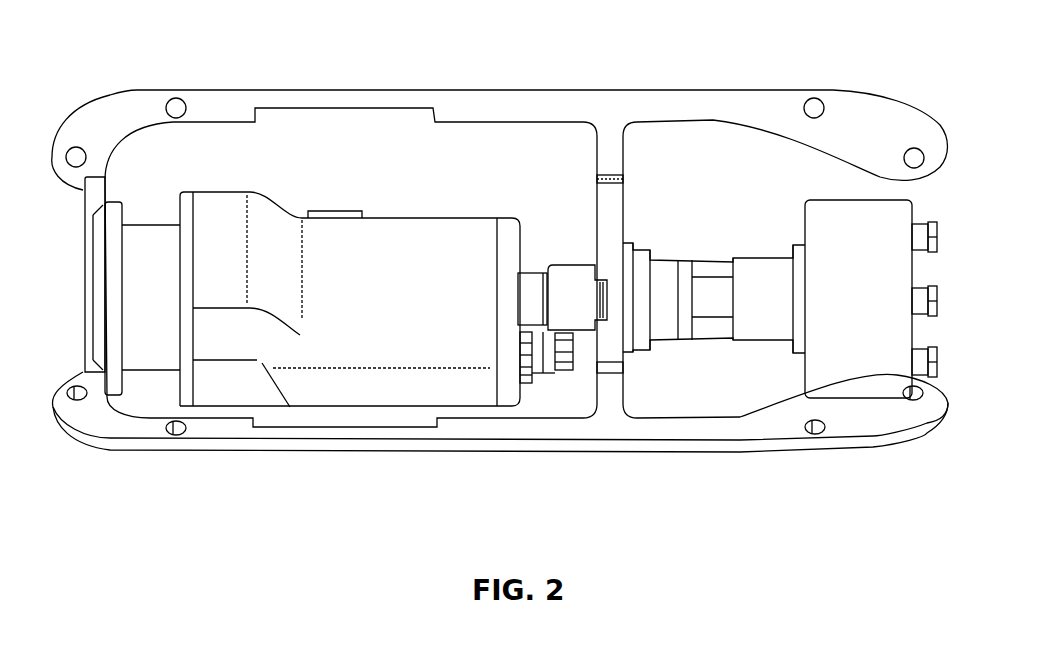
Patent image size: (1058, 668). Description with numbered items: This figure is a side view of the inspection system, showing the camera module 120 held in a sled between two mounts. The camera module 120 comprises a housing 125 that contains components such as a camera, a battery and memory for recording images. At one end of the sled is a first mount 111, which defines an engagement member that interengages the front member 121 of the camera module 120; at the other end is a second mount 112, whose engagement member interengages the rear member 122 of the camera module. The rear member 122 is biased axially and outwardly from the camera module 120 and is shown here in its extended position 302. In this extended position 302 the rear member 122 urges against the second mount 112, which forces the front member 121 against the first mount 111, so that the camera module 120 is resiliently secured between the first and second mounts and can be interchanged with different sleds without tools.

The first mount 111 is at (98, 187).
The front member 121 is at (110, 200).
The camera module 120 is at (253, 222).
The housing 125 is at (387, 240).
The rear member 122 is at (560, 263).
The second mount 112 is at (608, 218).
The extended position 302 is at (578, 323).